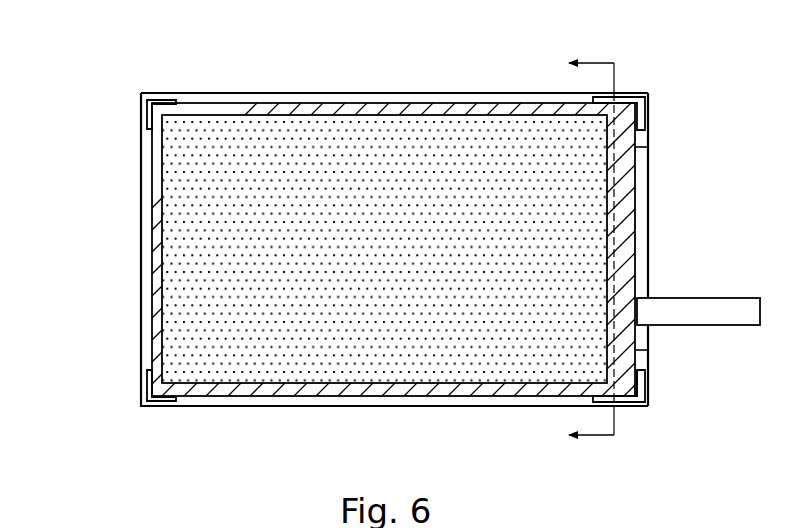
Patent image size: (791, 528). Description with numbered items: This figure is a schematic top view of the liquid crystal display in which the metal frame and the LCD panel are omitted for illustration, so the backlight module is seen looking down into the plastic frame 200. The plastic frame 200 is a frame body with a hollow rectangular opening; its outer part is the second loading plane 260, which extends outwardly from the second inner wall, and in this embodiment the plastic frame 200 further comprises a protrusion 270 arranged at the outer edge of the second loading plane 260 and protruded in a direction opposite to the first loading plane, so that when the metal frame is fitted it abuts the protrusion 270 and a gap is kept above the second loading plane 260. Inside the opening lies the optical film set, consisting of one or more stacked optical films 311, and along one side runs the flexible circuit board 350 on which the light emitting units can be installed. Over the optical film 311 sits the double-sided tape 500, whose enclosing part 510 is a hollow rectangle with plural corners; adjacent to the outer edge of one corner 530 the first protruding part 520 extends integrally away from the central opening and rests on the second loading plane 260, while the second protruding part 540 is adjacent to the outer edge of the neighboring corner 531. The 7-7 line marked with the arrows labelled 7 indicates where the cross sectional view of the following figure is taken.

The plastic frame 200 is at (176, 87).
The second loading plane 260 is at (227, 100).
The protrusion 270 is at (625, 110).
The optical film 311 is at (192, 180).
The enclosing part 510 is at (157, 258).
The double-sided tape 500 is at (143, 307).
The second protruding part 540 is at (637, 99).
The corner 531 is at (641, 125).
The corner 530 is at (633, 391).
The first protruding part 520 is at (627, 399).
The flexible circuit board 350 is at (677, 318).
The 7-7 line 7 is at (579, 251).